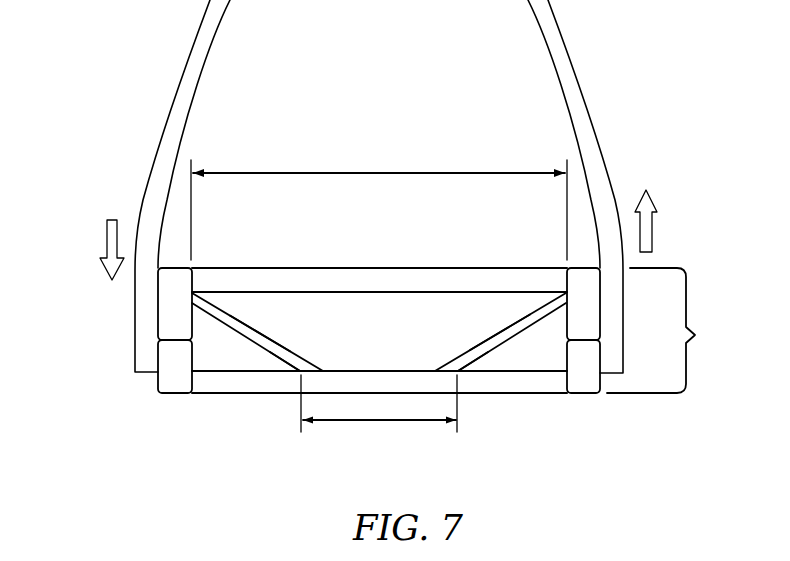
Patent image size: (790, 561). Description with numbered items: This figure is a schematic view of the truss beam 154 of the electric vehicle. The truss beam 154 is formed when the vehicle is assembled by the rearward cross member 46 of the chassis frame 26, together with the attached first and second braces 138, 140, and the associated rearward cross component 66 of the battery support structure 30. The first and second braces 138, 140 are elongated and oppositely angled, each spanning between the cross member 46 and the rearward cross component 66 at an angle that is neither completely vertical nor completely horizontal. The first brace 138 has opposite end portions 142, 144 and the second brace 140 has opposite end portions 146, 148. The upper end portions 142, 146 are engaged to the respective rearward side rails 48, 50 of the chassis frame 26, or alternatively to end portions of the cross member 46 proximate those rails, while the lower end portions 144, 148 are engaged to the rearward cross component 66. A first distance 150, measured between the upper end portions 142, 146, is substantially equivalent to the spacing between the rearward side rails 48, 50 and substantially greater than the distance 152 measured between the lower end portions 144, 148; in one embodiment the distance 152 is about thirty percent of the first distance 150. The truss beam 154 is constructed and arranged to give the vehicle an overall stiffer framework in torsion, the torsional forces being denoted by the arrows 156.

The chassis frame 26 is at (412, 257).
The support structure 30 is at (470, 403).
The cross member 46 is at (368, 268).
The rearward side rail 48 is at (600, 318).
The rearward side rail 50 is at (158, 318).
The rearward cross component 66 is at (287, 397).
The first brace 138 is at (503, 313).
The second brace 140 is at (280, 330).
The upper end portion 142 is at (549, 301).
The lower end portion 144 is at (466, 363).
The upper end portion 146 is at (207, 302).
The lower end portion 148 is at (297, 360).
The first distance 150 is at (380, 173).
The distance 152 is at (370, 422).
The truss beam 154 is at (695, 335).
The torsional forces 156 is at (107, 240).